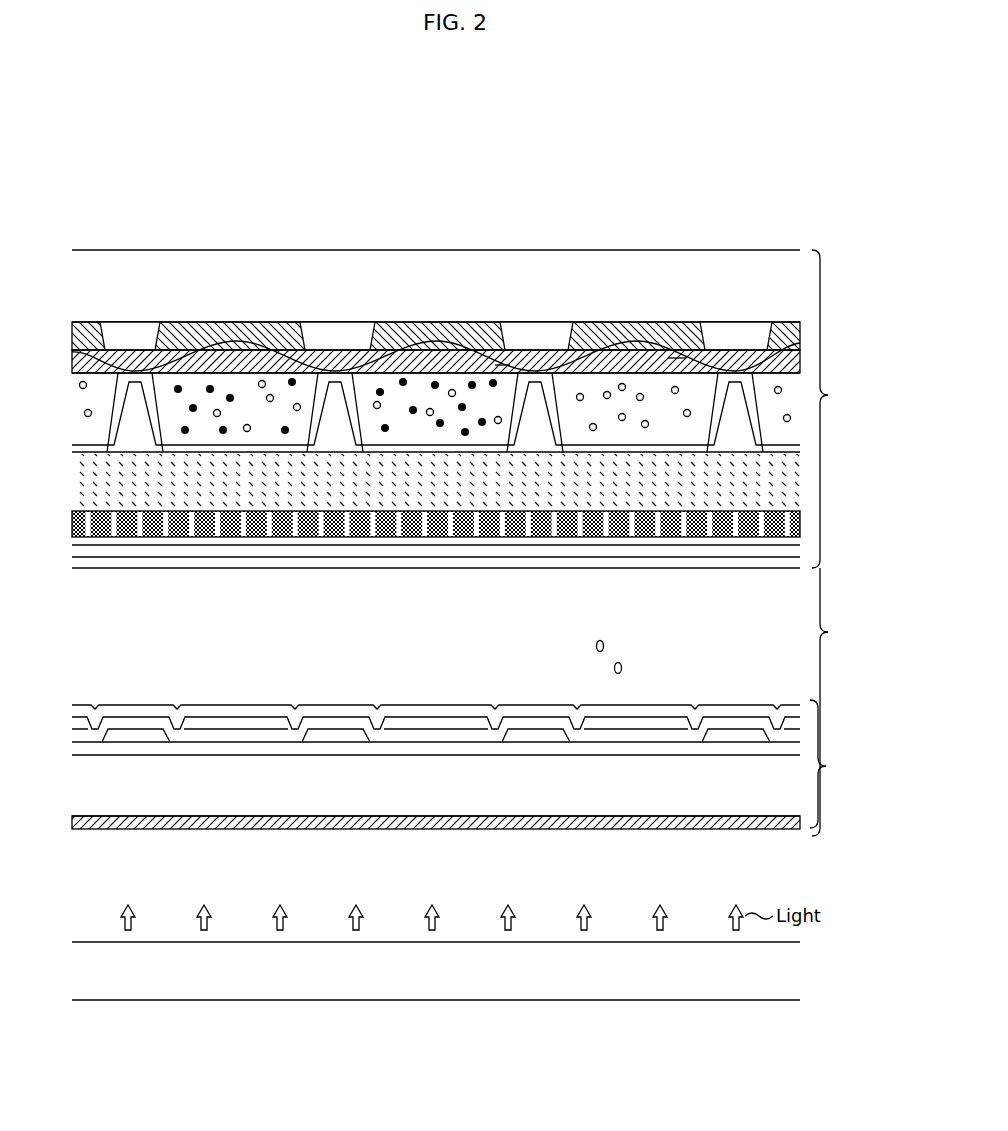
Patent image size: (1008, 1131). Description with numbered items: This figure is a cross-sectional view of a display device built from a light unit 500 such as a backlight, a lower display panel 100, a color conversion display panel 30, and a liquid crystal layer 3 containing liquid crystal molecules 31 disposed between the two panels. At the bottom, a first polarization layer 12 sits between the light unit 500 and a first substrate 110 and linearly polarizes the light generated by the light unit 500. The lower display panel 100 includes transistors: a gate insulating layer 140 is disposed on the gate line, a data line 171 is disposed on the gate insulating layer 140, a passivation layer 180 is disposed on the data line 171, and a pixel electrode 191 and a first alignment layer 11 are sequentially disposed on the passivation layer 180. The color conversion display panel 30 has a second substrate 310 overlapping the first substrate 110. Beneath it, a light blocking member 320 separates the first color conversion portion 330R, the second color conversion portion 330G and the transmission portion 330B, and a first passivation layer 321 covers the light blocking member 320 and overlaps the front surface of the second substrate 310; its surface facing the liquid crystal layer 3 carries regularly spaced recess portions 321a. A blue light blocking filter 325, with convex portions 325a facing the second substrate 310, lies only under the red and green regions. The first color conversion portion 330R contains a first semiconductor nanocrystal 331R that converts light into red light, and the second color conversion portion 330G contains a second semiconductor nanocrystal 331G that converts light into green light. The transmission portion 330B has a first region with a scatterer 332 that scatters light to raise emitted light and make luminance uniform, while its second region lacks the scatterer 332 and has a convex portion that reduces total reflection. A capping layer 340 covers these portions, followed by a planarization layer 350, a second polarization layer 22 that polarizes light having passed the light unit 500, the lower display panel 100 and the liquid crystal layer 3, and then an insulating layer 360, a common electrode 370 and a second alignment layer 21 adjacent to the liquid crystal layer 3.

The second substrate 310 is at (767, 257).
The blue light blocking filter 325 is at (425, 358).
The convex portion 325a is at (502, 376).
The light blocking member 320 is at (532, 332).
The first passivation layer 321 is at (400, 358).
The recess portion 321a is at (268, 393).
The first color conversion portion 330R is at (195, 382).
The first semiconductor nanocrystal 331R is at (177, 383).
The scatterer 332 is at (265, 379).
The second color conversion portion 330G is at (415, 433).
The second semiconductor nanocrystal 331G is at (462, 411).
The transmission portion 330B is at (760, 143).
The capping layer 340 is at (615, 447).
The planarization layer 350 is at (337, 493).
The second polarization layer 22 is at (148, 538).
The insulating layer 360 is at (232, 545).
The common electrode 370 is at (287, 557).
The second alignment layer 21 is at (558, 560).
The liquid crystal molecule 31 is at (623, 667).
The color conversion display panel 30 is at (832, 409).
The liquid crystal layer 3 is at (826, 702).
The lower display panel 100 is at (836, 764).
The first alignment layer 11 is at (233, 710).
The pixel electrode 191 is at (417, 722).
The passivation layer 180 is at (258, 735).
The data line 171 is at (125, 735).
The gate insulating layer 140 is at (375, 745).
The first substrate 110 is at (657, 805).
The first polarization layer 12 is at (722, 825).
The light unit 500 is at (773, 970).